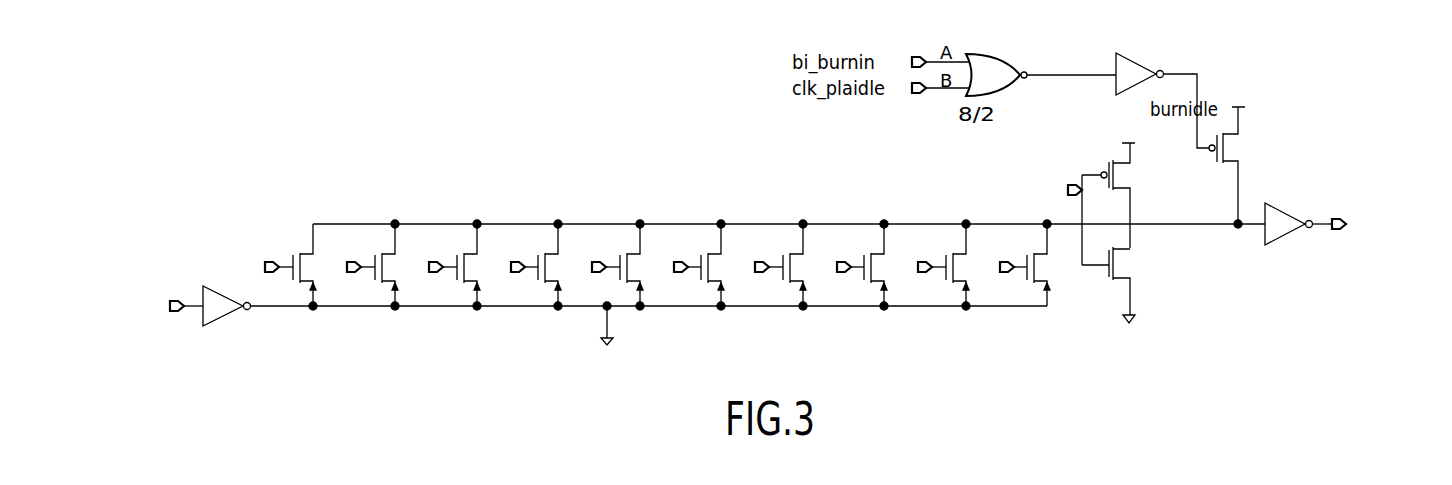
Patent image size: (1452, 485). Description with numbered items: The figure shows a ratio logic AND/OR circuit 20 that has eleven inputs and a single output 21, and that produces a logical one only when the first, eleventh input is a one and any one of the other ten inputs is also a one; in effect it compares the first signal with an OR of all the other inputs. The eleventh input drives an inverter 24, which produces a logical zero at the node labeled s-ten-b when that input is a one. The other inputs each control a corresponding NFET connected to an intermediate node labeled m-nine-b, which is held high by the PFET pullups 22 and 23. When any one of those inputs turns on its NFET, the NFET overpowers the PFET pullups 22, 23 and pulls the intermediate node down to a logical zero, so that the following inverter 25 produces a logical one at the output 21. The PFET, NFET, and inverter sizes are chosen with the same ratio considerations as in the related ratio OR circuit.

The ratio logic AND/OR circuit 20 is at (490, 208).
The output 21 is at (1365, 206).
The PFET pullup 22 is at (1245, 100).
The PFET pullup 23 is at (1100, 160).
The inverter 24 is at (232, 312).
The inverter 25 is at (1260, 233).